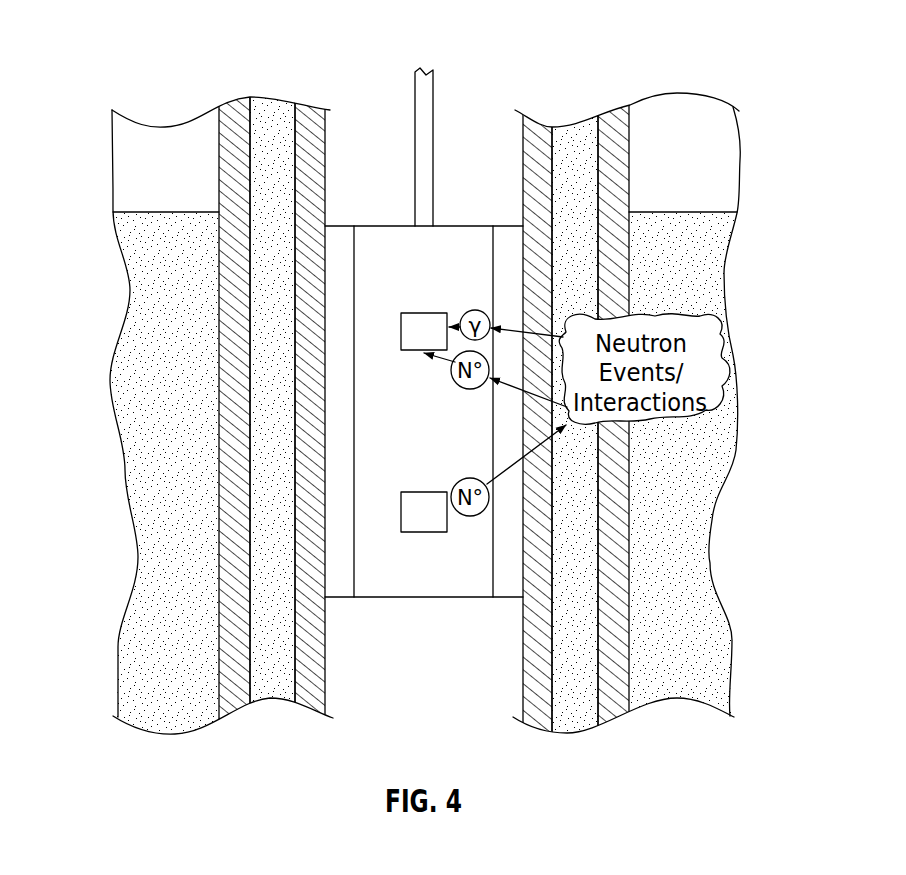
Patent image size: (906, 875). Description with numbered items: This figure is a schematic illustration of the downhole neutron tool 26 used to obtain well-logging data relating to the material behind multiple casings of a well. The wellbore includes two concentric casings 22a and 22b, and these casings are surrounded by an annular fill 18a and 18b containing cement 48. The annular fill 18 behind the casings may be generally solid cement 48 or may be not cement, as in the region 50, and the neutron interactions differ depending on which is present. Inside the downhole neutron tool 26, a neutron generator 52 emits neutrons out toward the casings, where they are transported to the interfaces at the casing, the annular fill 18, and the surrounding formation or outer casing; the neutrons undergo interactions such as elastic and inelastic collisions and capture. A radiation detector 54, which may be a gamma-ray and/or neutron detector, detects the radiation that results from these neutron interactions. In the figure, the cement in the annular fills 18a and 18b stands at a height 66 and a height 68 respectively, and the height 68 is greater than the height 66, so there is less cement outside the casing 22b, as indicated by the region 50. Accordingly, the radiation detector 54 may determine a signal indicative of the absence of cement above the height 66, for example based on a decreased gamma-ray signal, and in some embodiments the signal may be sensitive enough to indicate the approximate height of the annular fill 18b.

The region 50 is at (137, 155).
The height 66 is at (130, 206).
The casing 22a is at (305, 100).
The casing 22b is at (233, 110).
The height 68 is at (277, 103).
The downhole neutron tool 26 is at (401, 194).
The radiation detector 54 is at (423, 313).
The neutron generator 52 is at (423, 492).
The annular fill 18 is at (590, 306).
The cement 48 is at (270, 505).
The annular fill 18a is at (425, 405).
The annular fill 18b is at (408, 496).